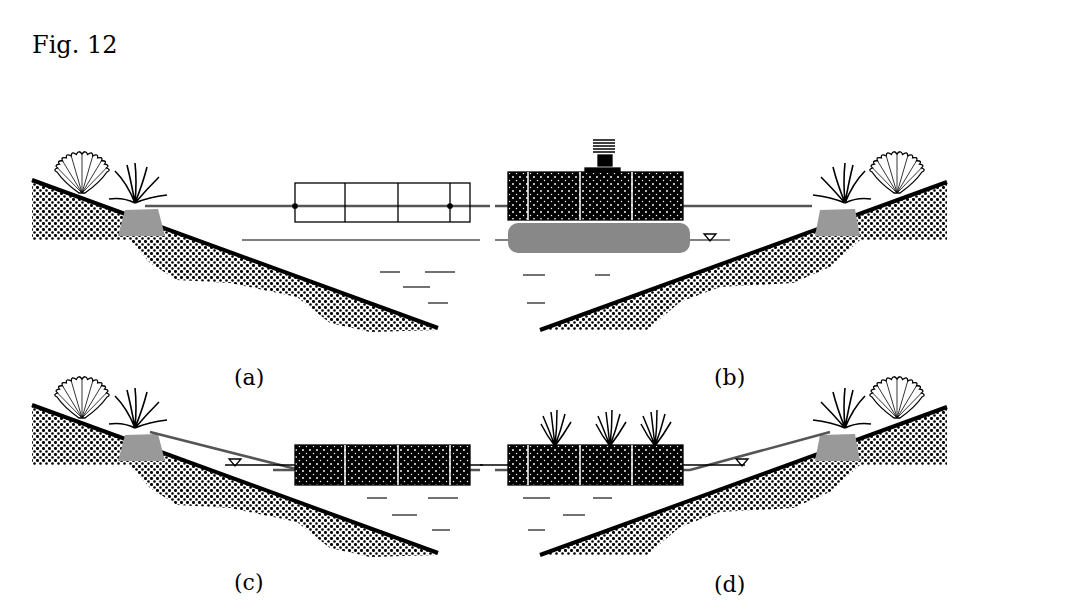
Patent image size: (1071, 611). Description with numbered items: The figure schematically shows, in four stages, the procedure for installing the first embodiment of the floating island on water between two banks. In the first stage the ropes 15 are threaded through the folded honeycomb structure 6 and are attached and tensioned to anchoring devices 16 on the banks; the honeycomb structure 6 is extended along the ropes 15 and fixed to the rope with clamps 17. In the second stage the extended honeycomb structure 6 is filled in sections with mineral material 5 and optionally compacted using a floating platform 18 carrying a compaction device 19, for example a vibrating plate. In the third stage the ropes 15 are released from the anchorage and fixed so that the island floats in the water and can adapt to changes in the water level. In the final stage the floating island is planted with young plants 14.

The mineral material 5 is at (553, 172).
The honeycomb structure 6 is at (378, 193).
The young plants 14 is at (547, 413).
The ropes 15 is at (237, 201).
The anchoring devices 16 is at (832, 213).
The clamps 17 is at (293, 204).
The floating platform 18 is at (587, 248).
The compaction device 19 is at (624, 161).